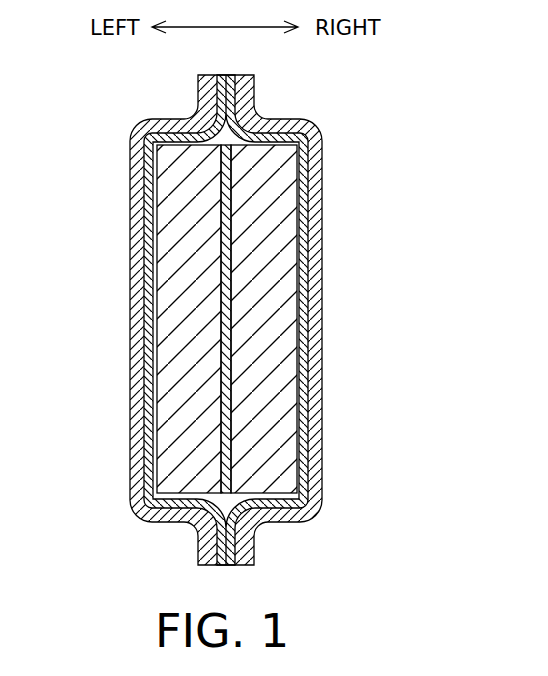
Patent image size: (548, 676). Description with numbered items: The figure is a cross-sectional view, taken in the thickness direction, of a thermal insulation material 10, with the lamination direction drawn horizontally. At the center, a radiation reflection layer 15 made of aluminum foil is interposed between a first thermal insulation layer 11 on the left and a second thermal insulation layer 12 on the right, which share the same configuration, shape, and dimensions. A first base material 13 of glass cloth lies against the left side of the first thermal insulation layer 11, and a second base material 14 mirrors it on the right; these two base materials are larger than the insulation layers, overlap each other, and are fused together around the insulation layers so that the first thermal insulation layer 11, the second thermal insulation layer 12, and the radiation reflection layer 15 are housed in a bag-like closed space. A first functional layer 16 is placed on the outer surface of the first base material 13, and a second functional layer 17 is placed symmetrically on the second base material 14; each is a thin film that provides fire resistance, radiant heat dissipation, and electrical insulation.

The thermal insulation material 10 is at (373, 120).
The first thermal insulation layer 11 is at (170, 230).
The second thermal insulation layer 12 is at (280, 230).
The first base material 13 is at (148, 122).
The second base material 14 is at (300, 120).
The radiation reflection layer 15 is at (230, 372).
The first functional layer 16 is at (130, 298).
The second functional layer 17 is at (320, 299).